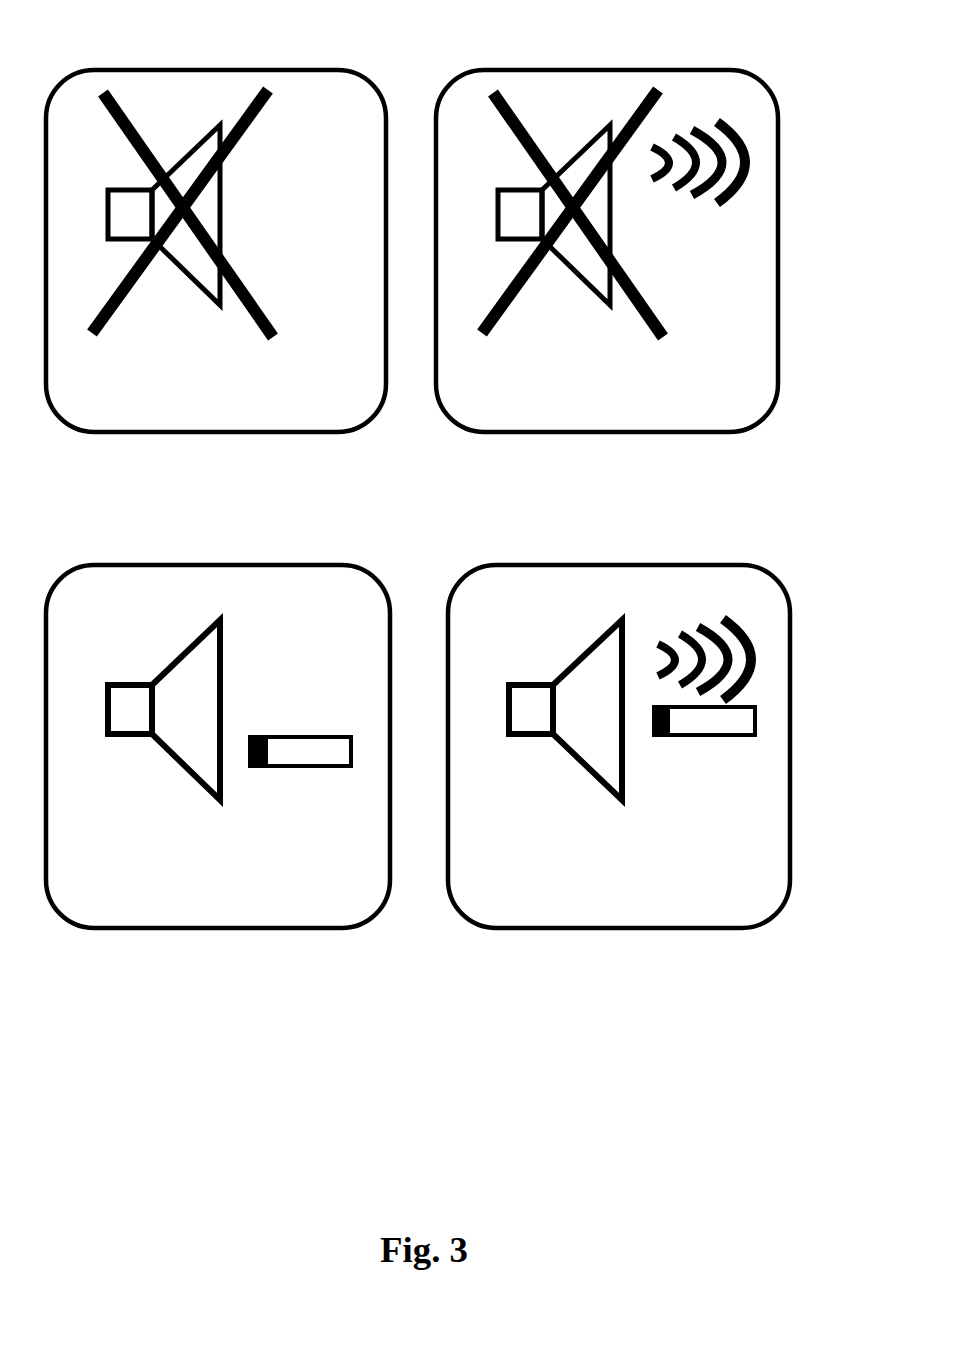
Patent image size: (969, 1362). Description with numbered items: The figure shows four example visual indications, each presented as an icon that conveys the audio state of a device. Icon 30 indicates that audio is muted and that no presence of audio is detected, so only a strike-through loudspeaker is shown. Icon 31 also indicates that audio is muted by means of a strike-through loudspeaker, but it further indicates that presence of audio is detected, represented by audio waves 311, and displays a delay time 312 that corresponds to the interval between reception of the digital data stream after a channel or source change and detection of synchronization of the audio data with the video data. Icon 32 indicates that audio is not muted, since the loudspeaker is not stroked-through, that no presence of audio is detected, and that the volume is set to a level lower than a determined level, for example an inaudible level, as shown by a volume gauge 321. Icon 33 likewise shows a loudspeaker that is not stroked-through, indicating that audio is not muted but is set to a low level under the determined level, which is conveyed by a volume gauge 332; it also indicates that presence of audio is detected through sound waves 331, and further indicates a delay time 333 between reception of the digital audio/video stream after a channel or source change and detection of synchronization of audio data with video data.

The icon 30 is at (383, 92).
The icon 31 is at (652, 223).
The icon 32 is at (238, 712).
The icon 33 is at (660, 716).
The audio waves 311 is at (762, 163).
The delay time 312 is at (762, 263).
The volume gauge 321 is at (278, 727).
The sound waves 331 is at (765, 650).
The volume gauge 332 is at (767, 719).
The delay time 333 is at (765, 775).